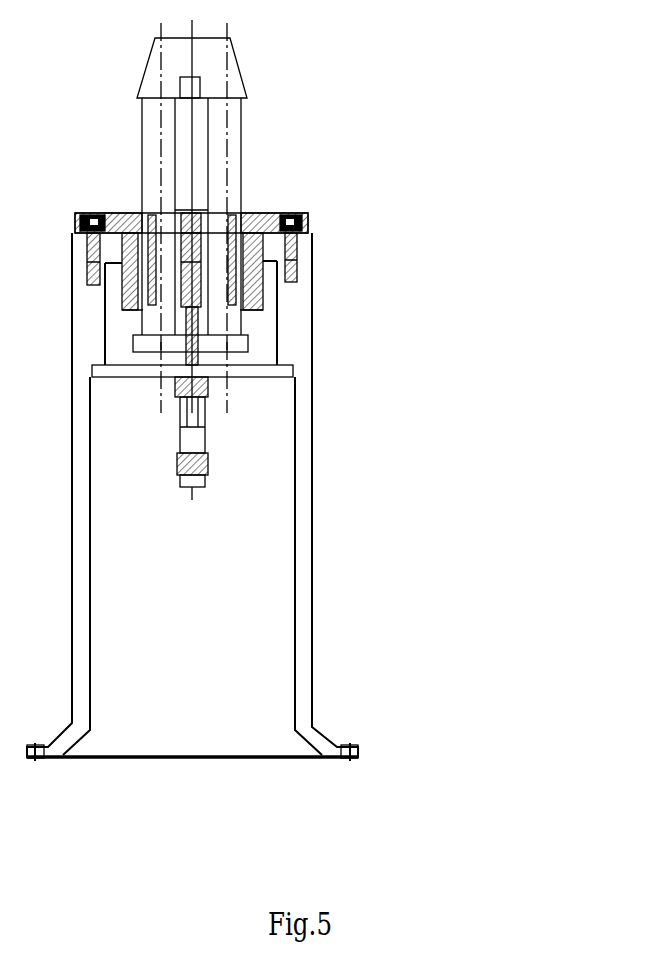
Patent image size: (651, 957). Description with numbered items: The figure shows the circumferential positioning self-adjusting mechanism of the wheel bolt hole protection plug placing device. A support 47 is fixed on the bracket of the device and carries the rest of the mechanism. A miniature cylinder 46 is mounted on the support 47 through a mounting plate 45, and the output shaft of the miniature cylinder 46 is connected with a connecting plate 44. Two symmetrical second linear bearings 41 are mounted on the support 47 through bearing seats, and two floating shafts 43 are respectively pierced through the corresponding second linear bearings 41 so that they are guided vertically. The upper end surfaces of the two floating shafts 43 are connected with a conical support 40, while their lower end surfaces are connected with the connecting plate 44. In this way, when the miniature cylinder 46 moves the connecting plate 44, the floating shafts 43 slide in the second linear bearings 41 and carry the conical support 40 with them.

The conical support 40 is at (592, 145).
The floating shaft 43 is at (592, 212).
The second linear bearing 41 is at (592, 275).
The support 47 is at (592, 405).
The connecting plate 44 is at (592, 470).
The mounting plate 45 is at (592, 535).
The miniature cylinder 46 is at (592, 602).